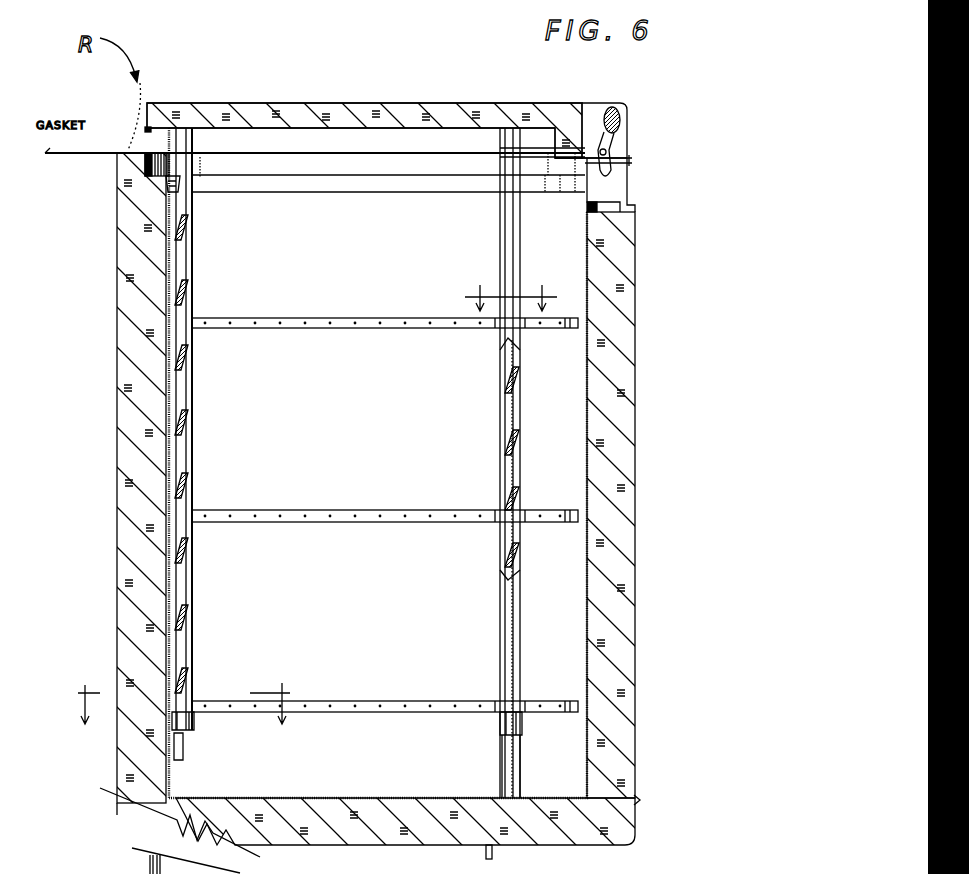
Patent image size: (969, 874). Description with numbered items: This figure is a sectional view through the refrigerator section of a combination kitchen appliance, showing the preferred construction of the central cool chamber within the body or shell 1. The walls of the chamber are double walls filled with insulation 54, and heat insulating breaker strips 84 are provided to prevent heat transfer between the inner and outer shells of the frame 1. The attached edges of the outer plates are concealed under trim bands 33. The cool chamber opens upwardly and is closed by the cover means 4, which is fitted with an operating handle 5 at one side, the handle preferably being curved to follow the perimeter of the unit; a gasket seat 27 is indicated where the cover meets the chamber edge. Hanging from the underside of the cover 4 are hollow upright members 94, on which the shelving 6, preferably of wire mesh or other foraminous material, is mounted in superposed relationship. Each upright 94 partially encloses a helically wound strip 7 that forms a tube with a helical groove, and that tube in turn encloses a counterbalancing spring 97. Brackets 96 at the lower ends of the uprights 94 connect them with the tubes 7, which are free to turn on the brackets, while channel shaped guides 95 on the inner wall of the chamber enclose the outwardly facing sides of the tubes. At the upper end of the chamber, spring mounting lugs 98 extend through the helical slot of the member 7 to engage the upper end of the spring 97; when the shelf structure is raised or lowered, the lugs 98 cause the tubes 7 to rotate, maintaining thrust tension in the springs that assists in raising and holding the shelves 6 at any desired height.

The body or shell 1 is at (635, 515).
The cover means 4 is at (432, 103).
The operating handle 5 is at (627, 118).
The shelving 6 is at (409, 318).
The helically wound strip 7 is at (133, 868).
The gasket seat 27 is at (147, 129).
The trim bands 33 is at (638, 800).
The insulation 54 is at (263, 114).
The heat insulating breaker strips 84 is at (145, 165).
The hollow upright members 94 is at (186, 172).
The channel shaped guides 95 is at (179, 760).
The brackets 96 is at (194, 725).
The counterbalancing spring 97 is at (188, 613).
The spring mounting lugs 98 is at (176, 185).